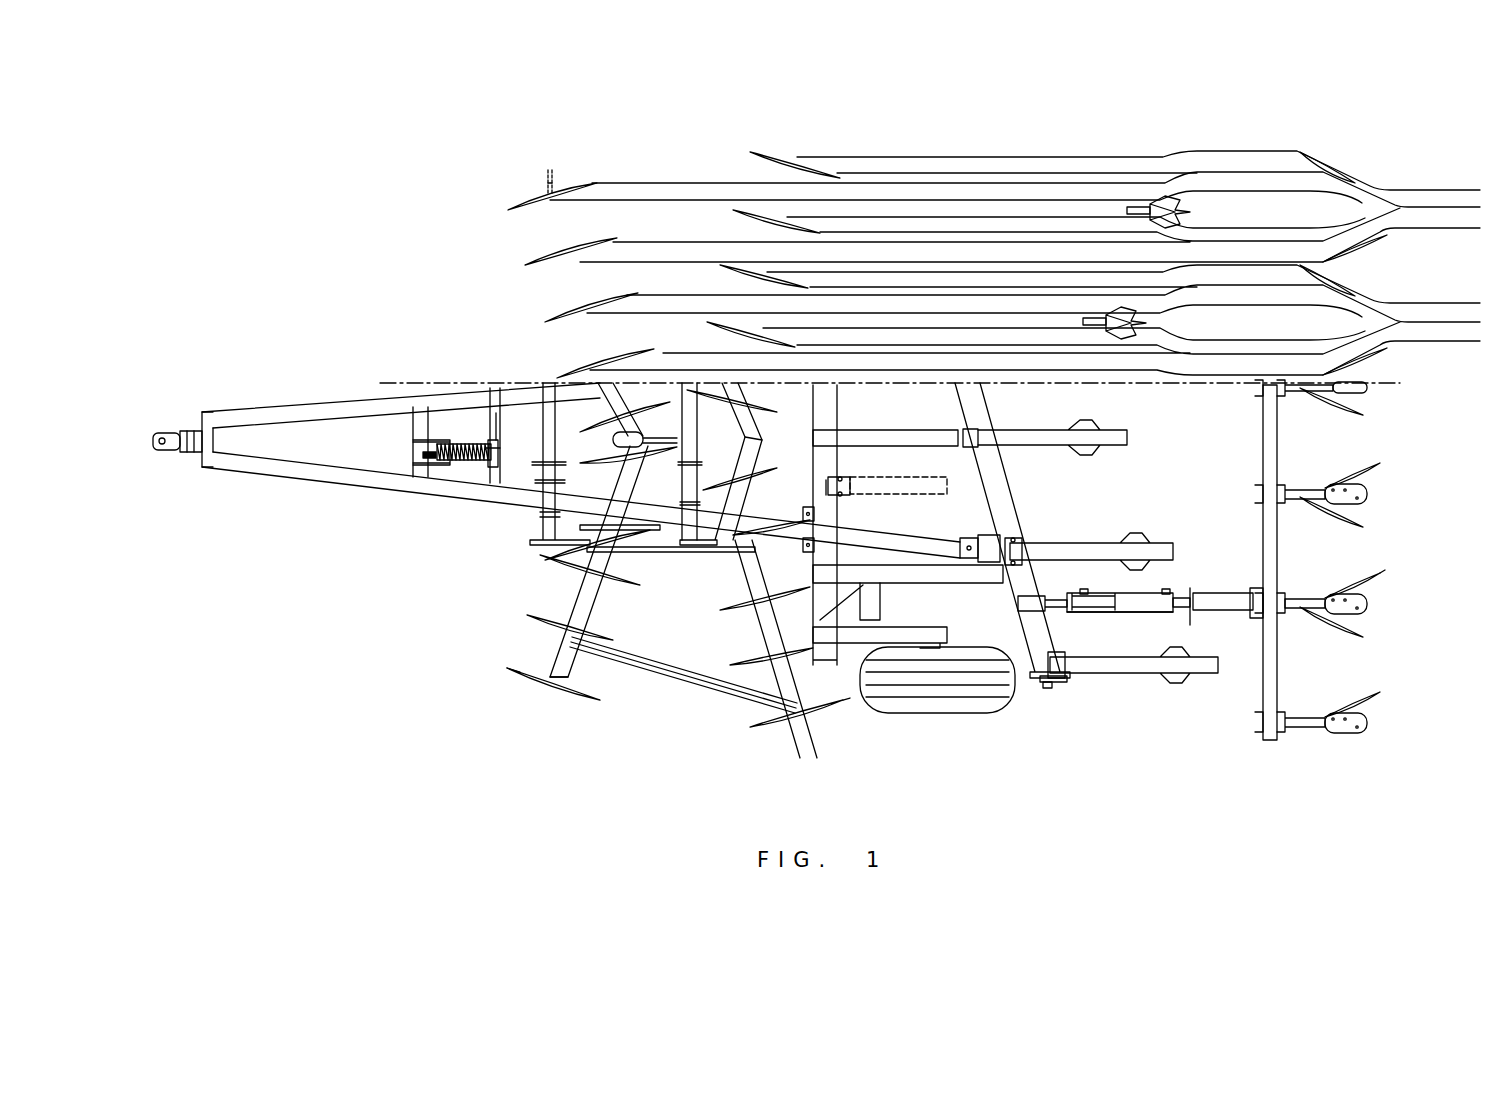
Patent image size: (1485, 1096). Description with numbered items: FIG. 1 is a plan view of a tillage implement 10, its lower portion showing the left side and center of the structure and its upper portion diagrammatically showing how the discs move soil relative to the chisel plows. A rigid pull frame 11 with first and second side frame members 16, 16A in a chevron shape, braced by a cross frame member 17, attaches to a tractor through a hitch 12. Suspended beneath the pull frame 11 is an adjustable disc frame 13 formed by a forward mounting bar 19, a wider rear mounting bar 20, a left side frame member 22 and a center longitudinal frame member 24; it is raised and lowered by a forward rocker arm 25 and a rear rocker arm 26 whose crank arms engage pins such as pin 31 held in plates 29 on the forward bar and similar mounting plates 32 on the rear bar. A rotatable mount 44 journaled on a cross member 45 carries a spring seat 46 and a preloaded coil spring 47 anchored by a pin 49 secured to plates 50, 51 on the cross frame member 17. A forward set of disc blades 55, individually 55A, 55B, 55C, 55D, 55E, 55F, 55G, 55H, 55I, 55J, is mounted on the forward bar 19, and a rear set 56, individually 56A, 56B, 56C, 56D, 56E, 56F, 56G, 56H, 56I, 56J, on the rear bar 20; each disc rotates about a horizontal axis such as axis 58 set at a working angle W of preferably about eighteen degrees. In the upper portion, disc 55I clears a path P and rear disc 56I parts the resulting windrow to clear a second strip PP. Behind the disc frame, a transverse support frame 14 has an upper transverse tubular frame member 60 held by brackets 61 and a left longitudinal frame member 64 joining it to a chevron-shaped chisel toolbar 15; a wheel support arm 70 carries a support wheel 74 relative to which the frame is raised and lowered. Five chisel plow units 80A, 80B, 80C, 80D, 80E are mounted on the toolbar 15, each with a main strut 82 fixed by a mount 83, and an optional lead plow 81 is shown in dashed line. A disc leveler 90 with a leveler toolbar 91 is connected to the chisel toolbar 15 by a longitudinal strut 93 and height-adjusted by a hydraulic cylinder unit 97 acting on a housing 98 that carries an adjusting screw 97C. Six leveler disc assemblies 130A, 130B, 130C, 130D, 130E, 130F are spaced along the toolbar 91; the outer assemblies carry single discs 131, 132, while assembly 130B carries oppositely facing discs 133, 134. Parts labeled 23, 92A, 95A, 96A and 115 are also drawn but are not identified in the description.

The tillage implement 10 is at (385, 573).
The pull frame 11 is at (300, 490).
The hitch 12 is at (162, 453).
The disc frame 13 is at (573, 676).
The transverse support frame 14 is at (825, 412).
The chisel toolbar 15 is at (1000, 508).
The side frame member 16 is at (402, 486).
The side frame member 16A is at (303, 410).
The cross frame member 17 is at (497, 413).
The forward disc mounting bar 19 is at (577, 595).
The rear disc mounting bar 20 is at (757, 588).
The left side frame member 22 is at (710, 677).
The leg member 23 is at (545, 592).
The center longitudinal frame member 24 is at (632, 450).
The forward rocker arm 25 is at (545, 413).
The rear rocker arm 26 is at (687, 383).
The pair of plates 29 is at (590, 540).
The pin 31 is at (587, 527).
The pair of mounting plates 32 is at (760, 540).
The rotatable mount 44 is at (430, 466).
The cross member 45 is at (413, 418).
The spring seat 46 is at (422, 456).
The coil spring 47 is at (465, 446).
The pin 49 is at (496, 448).
The plate 50 is at (492, 446).
The plate 51 is at (489, 472).
The forward set of disc blades 55 is at (527, 690).
The disc 55A is at (560, 690).
The disc 55B is at (610, 638).
The disc 55C is at (622, 585).
The disc 55D is at (640, 547).
The disc 55E is at (610, 462).
The disc 55F is at (612, 422).
The disc 55G is at (633, 344).
The disc 55H is at (627, 291).
The disc 55I is at (590, 236).
The disc 55J is at (583, 182).
The rear set of disc blades 56 is at (830, 722).
The disc blade 56A is at (755, 727).
The disc blade 56B is at (762, 648).
The disc blade 56C is at (745, 615).
The disc blade 56D is at (740, 545).
The disc blade 56E is at (783, 485).
The disc blade 56F is at (780, 412).
The disc blade 56G is at (740, 333).
The disc blade 56H is at (743, 270).
The disc blade 56I is at (750, 225).
The disc blade 56J is at (770, 162).
The horizontal axis 58 is at (547, 183).
The upper transverse tubular frame member 60 is at (830, 518).
The bracket 61 is at (814, 505).
The left side longitudinal frame member 64 is at (945, 577).
The wheel support arm 70 is at (907, 630).
The support wheel 74 is at (947, 708).
The chisel plow unit 80A is at (1207, 677).
The chisel plow unit 80B is at (1167, 522).
The chisel plow unit 80C is at (1118, 428).
The chisel plow unit 80D is at (1155, 323).
The chisel plow unit 80E is at (1200, 211).
The lead plow 81 is at (895, 487).
The main strut 82 is at (1117, 672).
The mount 83 is at (1063, 676).
The disc leveler 90 is at (1348, 583).
The leveler toolbar 91 is at (1272, 553).
The pin 92A is at (1084, 590).
The longitudinal strut 93 is at (1218, 608).
The clevis 95A is at (1053, 582).
The pin 96A is at (1167, 590).
The hydraulic cylinder unit 97 is at (1090, 604).
The adjusting screw 97C is at (1195, 607).
The housing 98 is at (1125, 610).
The clamp 115 is at (1300, 600).
The leveler disc assembly 130A is at (1377, 718).
The leveler disc assembly 130B is at (1373, 609).
The leveler disc assembly 130C is at (1372, 495).
The leveler disc assembly 130D is at (1377, 394).
The leveler disc assembly 130E is at (1375, 273).
The leveler disc assembly 130F is at (1373, 170).
The disc 131 is at (1352, 705).
The disc 132 is at (1345, 174).
The disc 133 is at (1330, 622).
The disc 134 is at (1377, 577).
The path P is at (683, 248).
The second strip of ground PP is at (840, 220).
The working angle W is at (548, 176).